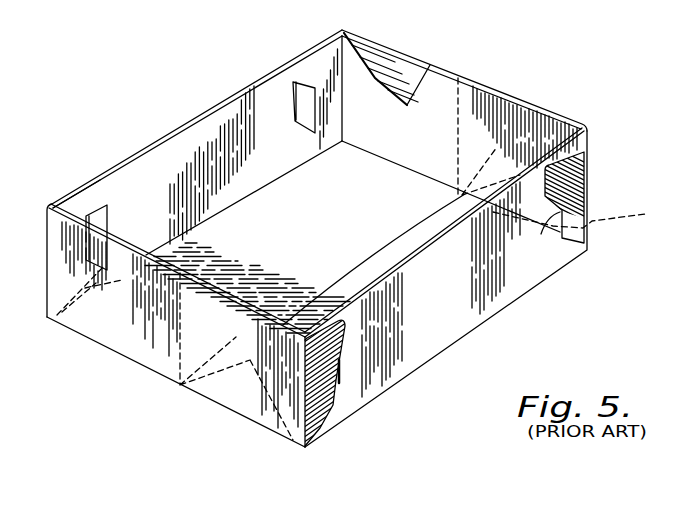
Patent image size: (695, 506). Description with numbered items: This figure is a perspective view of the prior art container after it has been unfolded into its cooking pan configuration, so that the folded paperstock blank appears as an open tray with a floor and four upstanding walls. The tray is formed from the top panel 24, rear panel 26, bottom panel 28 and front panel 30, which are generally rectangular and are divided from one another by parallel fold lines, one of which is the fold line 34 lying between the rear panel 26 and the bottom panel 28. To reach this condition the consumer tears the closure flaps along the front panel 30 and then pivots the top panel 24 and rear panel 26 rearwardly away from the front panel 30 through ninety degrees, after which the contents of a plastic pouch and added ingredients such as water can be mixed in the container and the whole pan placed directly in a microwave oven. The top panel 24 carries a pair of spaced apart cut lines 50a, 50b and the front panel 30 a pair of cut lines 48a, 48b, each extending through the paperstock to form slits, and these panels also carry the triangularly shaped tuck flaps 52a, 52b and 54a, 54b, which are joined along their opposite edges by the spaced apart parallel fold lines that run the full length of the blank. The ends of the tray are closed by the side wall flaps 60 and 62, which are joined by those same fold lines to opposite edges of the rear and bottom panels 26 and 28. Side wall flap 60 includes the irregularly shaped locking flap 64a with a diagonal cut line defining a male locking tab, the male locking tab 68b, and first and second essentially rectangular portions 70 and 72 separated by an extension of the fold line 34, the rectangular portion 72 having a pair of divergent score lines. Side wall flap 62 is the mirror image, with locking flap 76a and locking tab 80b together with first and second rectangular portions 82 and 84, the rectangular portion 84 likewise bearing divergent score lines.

The top panel 24 is at (270, 168).
The rear panel 26 is at (327, 233).
The bottom panel 28 is at (389, 278).
The front panel 30 is at (459, 295).
The fold line 34 is at (383, 249).
The cut line 48a is at (108, 216).
The cut line 48b is at (318, 113).
The cut line 50a is at (340, 372).
The cut line 50b is at (556, 216).
The tuck flap 52a is at (98, 292).
The tuck flap 52b is at (370, 80).
The tuck flap 54a is at (247, 427).
The tuck flap 54b is at (588, 216).
The side wall flap 60 is at (130, 347).
The side wall flap 62 is at (488, 107).
The locking flap 64a is at (325, 412).
The male locking tab 68b is at (98, 237).
The first rectangular portion 70 is at (70, 323).
The second rectangular portion 72 is at (216, 396).
The locking flap 76a is at (583, 178).
The locking tab 80b is at (292, 82).
The first rectangular portion 82 is at (448, 90).
The second rectangular portion 84 is at (545, 130).